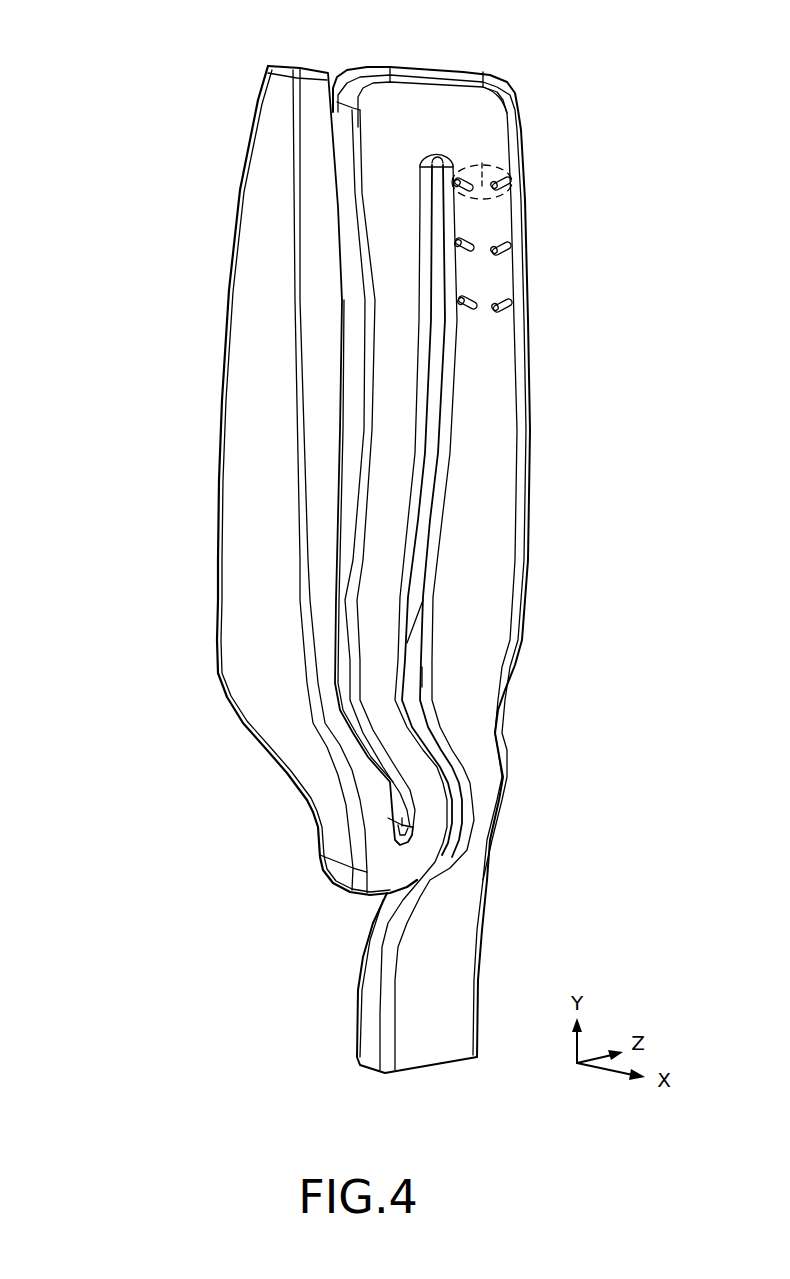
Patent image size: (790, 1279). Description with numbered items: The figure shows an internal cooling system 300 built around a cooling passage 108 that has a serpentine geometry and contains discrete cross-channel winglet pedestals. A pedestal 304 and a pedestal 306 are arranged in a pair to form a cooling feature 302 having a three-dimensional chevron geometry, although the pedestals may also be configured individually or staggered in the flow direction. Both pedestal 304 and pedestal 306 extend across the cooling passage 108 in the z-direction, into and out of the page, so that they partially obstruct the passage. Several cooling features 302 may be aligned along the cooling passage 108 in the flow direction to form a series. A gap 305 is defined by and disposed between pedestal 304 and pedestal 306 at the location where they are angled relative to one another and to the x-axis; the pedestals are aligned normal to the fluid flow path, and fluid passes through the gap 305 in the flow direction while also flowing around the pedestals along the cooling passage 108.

The internal cooling system 300 is at (140, 90).
The cooling feature 302 is at (500, 198).
The pedestal 304 is at (495, 173).
The gap 305 is at (482, 183).
The pedestal 306 is at (458, 180).
The cooling passage 108 is at (492, 100).